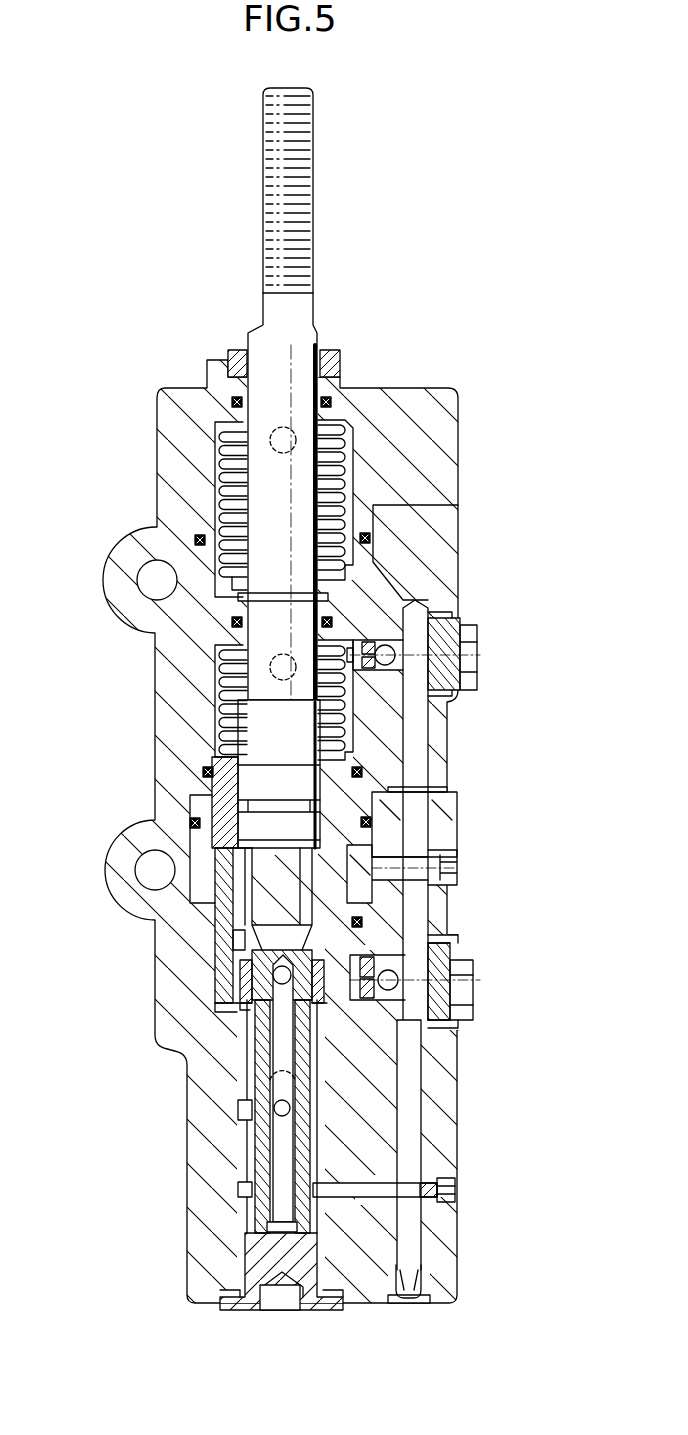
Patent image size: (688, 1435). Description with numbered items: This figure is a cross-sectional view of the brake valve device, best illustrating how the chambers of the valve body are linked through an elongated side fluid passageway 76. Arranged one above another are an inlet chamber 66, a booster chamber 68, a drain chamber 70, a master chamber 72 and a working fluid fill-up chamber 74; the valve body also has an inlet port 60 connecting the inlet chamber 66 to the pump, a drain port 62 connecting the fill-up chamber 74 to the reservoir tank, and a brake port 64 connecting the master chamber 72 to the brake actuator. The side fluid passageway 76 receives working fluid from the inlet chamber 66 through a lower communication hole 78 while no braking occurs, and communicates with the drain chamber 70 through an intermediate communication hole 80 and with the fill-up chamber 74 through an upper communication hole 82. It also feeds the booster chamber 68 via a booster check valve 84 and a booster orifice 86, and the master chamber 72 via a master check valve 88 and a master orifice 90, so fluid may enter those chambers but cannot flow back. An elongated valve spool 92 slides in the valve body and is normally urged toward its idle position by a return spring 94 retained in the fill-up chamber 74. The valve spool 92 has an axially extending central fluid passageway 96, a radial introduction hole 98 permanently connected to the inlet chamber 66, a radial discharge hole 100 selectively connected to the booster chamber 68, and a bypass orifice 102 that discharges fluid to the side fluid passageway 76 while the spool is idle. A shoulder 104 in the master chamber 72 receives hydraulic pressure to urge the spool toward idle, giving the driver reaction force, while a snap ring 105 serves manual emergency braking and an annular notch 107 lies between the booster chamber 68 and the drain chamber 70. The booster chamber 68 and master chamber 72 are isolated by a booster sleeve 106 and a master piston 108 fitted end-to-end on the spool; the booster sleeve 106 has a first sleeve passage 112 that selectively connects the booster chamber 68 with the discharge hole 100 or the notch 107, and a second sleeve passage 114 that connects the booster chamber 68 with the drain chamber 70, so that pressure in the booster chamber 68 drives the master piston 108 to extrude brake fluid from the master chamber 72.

The inlet port 60 is at (250, 1102).
The drain port 62 is at (268, 440).
The brake port 64 is at (215, 665).
The inlet chamber 66 is at (243, 1102).
The booster chamber 68 is at (216, 1010).
The drain chamber 70 is at (214, 892).
The master chamber 72 is at (220, 690).
The working fluid fill-up chamber 74 is at (356, 492).
The side fluid passageway 76 is at (418, 903).
The lower communication hole 78 is at (410, 1232).
The intermediate communication hole 80 is at (413, 856).
The upper communication hole 82 is at (425, 605).
The booster check valve 84 is at (446, 1024).
The booster orifice 86 is at (458, 940).
The master check valve 88 is at (393, 666).
The master orifice 90 is at (356, 650).
The valve spool 92 is at (318, 345).
The return spring 94 is at (345, 450).
The central fluid passageway 96 is at (278, 1150).
The introduction hole 98 is at (250, 1118).
The discharge hole 100 is at (216, 972).
The bypass orifice 102 is at (330, 1180).
The shoulder 104 is at (215, 714).
The snap ring 105 is at (362, 1003).
The booster sleeve 106 is at (216, 947).
The annular notch 107 is at (206, 921).
The master piston 108 is at (196, 797).
The first sleeve passage 112 is at (216, 998).
The second sleeve passage 114 is at (188, 842).